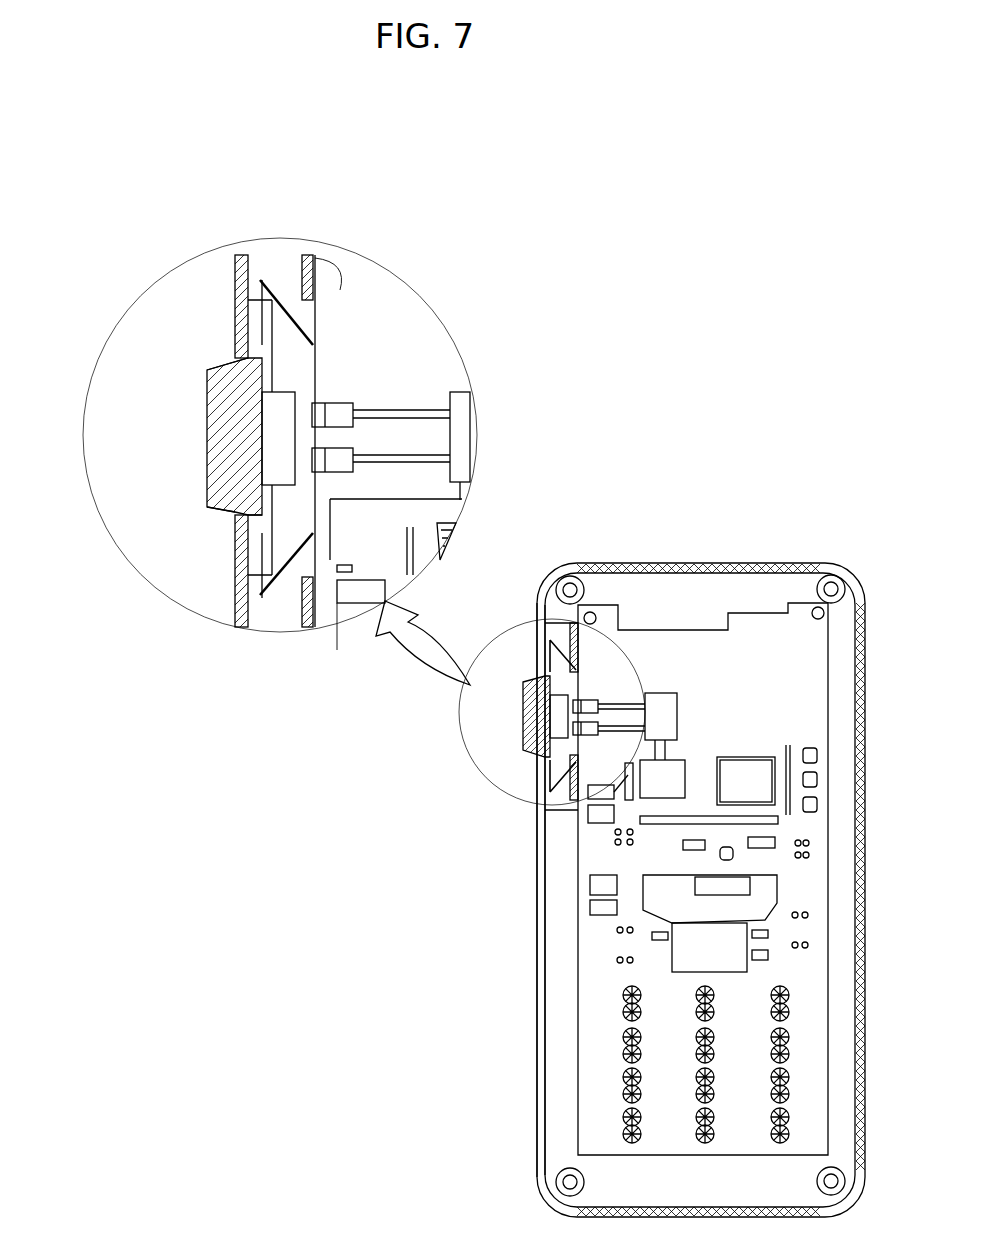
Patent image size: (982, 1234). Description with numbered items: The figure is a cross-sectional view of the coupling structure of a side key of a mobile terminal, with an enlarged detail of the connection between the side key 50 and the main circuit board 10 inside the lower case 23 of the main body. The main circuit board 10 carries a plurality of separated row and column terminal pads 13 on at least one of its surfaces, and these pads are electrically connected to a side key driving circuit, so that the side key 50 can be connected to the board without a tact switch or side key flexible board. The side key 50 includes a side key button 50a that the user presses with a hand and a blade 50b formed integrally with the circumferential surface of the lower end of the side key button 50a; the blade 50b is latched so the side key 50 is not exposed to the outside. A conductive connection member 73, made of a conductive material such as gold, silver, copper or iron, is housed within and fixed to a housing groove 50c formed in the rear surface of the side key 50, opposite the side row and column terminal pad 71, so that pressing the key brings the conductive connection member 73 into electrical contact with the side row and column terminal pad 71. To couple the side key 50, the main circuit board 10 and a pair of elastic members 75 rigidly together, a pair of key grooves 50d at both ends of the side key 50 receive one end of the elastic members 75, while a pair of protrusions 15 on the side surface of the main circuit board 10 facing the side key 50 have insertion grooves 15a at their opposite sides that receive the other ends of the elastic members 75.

The main circuit board 10 is at (768, 638).
The row and column terminal pads 13 is at (461, 391).
The protrusions 15 is at (310, 254).
The insertion grooves 15a is at (338, 284).
The lower case 23 is at (812, 575).
The side key 50 is at (85, 615).
The side key button 50a is at (210, 506).
The blade 50b is at (236, 556).
The housing groove 50c is at (222, 456).
The key grooves 50d is at (243, 256).
The side row and column terminal pad 71 is at (345, 402).
The conductive connection member 73 is at (272, 437).
The elastic members 75 is at (264, 278).